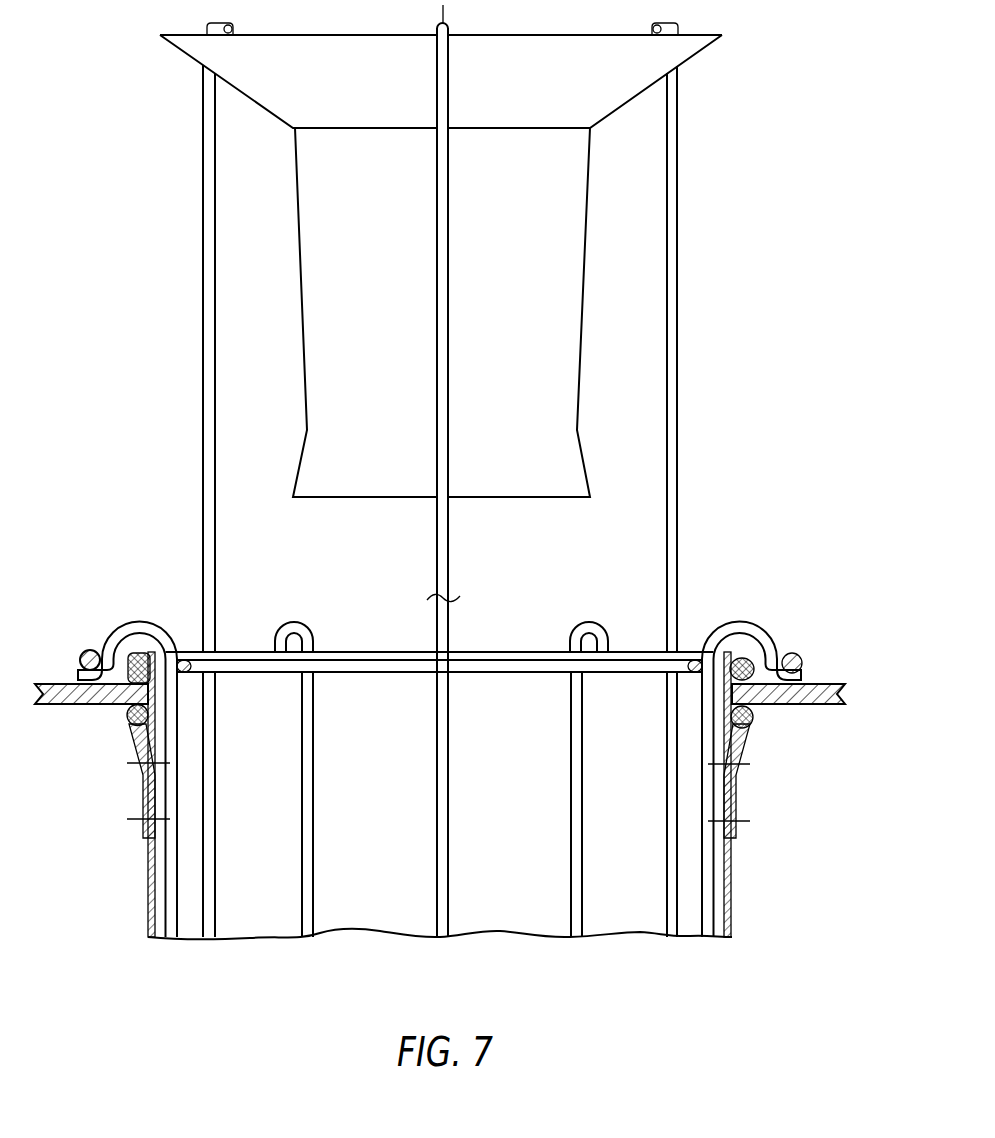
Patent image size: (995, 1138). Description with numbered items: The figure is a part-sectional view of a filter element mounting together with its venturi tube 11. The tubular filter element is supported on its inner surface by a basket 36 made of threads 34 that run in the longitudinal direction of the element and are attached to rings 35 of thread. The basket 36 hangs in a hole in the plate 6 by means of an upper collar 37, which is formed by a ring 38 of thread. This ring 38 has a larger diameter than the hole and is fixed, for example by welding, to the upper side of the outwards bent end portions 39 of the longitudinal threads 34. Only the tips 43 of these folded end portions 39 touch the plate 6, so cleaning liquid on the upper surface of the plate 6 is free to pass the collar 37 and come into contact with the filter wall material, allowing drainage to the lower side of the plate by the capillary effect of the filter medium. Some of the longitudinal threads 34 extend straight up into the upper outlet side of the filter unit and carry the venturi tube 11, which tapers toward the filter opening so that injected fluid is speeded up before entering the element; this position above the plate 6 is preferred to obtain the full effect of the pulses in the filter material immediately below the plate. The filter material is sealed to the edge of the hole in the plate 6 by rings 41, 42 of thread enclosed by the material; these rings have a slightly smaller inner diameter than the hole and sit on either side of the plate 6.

The venturi tube 11 is at (300, 250).
The upper collar 37 is at (136, 606).
The outwards bent end portions 39 is at (745, 628).
The ring of thread 41 is at (757, 660).
The ring of thread 38 is at (802, 664).
The tips 43 is at (800, 678).
The ring of thread 42 is at (748, 724).
The plate 6 is at (66, 700).
The rings of thread 35 is at (368, 665).
The threads 34 is at (313, 795).
The basket 36 is at (350, 946).